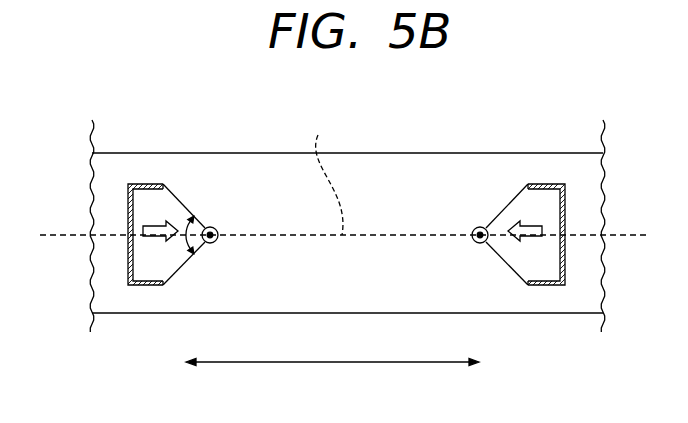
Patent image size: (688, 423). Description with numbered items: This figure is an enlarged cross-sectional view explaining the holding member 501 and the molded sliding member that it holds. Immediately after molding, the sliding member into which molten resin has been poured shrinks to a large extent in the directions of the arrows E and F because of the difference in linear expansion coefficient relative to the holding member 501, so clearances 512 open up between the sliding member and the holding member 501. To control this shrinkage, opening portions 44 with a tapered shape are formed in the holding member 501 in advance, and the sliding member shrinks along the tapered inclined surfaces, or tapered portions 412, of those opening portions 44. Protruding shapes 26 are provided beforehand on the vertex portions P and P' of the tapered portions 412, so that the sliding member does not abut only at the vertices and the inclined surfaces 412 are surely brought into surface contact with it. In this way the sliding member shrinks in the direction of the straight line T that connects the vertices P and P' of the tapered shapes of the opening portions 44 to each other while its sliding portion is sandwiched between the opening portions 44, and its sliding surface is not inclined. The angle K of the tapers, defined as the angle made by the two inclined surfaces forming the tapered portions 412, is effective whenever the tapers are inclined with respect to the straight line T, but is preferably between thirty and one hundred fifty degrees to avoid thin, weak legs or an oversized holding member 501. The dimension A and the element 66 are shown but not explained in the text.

The holding member 501 is at (388, 192).
The clearances 512 is at (128, 202).
The holder inner wall 66 is at (145, 197).
The opening portions 44 is at (145, 286).
The tapered portions 412 is at (188, 205).
The protruding shapes 26 is at (211, 227).
The vertex portion P is at (231, 257).
The vertex portion P' is at (466, 266).
The arrow E is at (160, 220).
The arrow F is at (525, 220).
The angle of tapers K is at (133, 243).
The straight line T is at (327, 174).
The distance A is at (332, 375).